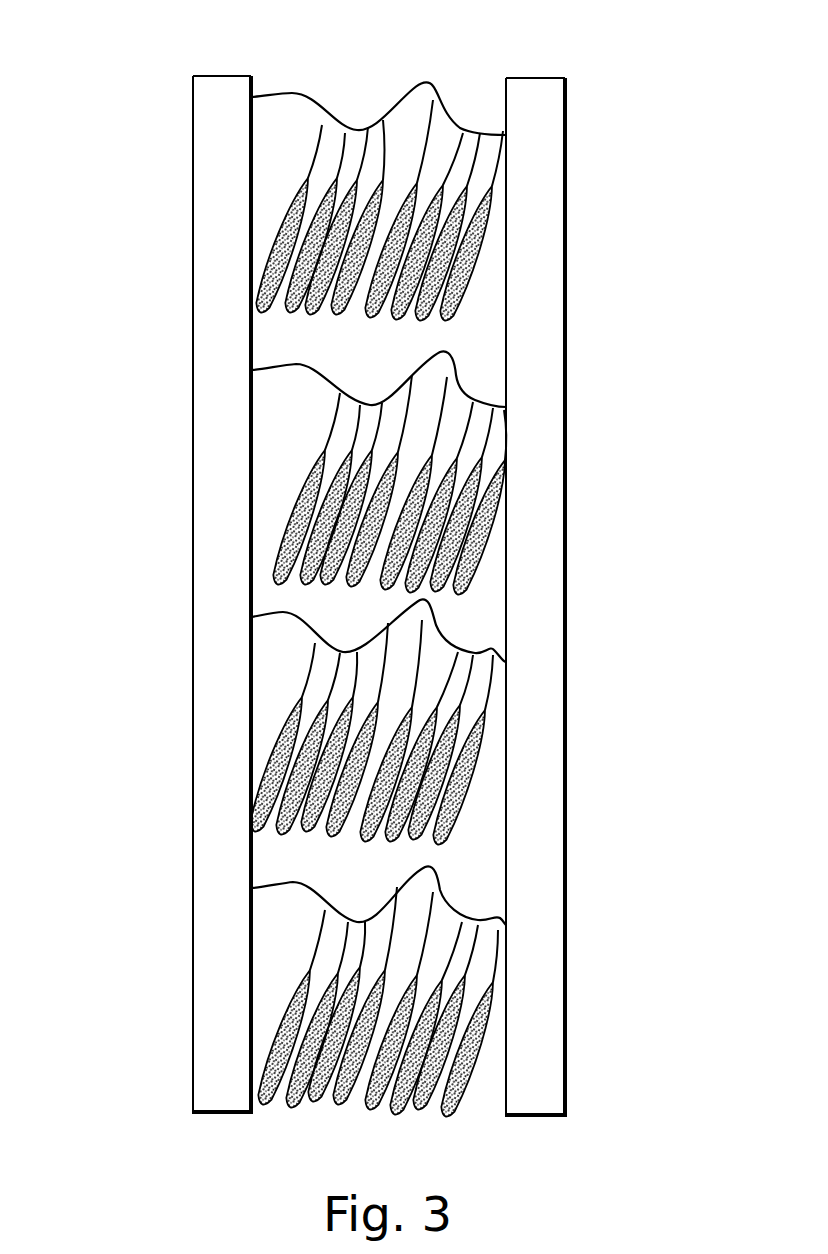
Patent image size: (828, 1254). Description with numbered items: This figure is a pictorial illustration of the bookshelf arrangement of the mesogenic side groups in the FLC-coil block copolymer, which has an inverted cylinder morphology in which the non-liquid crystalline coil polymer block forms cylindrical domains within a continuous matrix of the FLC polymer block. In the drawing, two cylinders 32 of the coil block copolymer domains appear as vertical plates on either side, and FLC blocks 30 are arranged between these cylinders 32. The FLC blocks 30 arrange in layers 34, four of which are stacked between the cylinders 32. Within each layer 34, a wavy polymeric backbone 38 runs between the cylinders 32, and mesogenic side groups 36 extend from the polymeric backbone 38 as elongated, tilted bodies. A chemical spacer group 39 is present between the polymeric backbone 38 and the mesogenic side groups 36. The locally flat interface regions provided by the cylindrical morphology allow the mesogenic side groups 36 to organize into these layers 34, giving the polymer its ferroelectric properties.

The FLC blocks 30 is at (484, 82).
The cylinders 32 is at (202, 392).
The layers 34 is at (180, 77).
The mesogenic side groups 36 is at (485, 258).
The polymeric backbone 38 is at (300, 95).
The chemical spacer group 39 is at (414, 95).